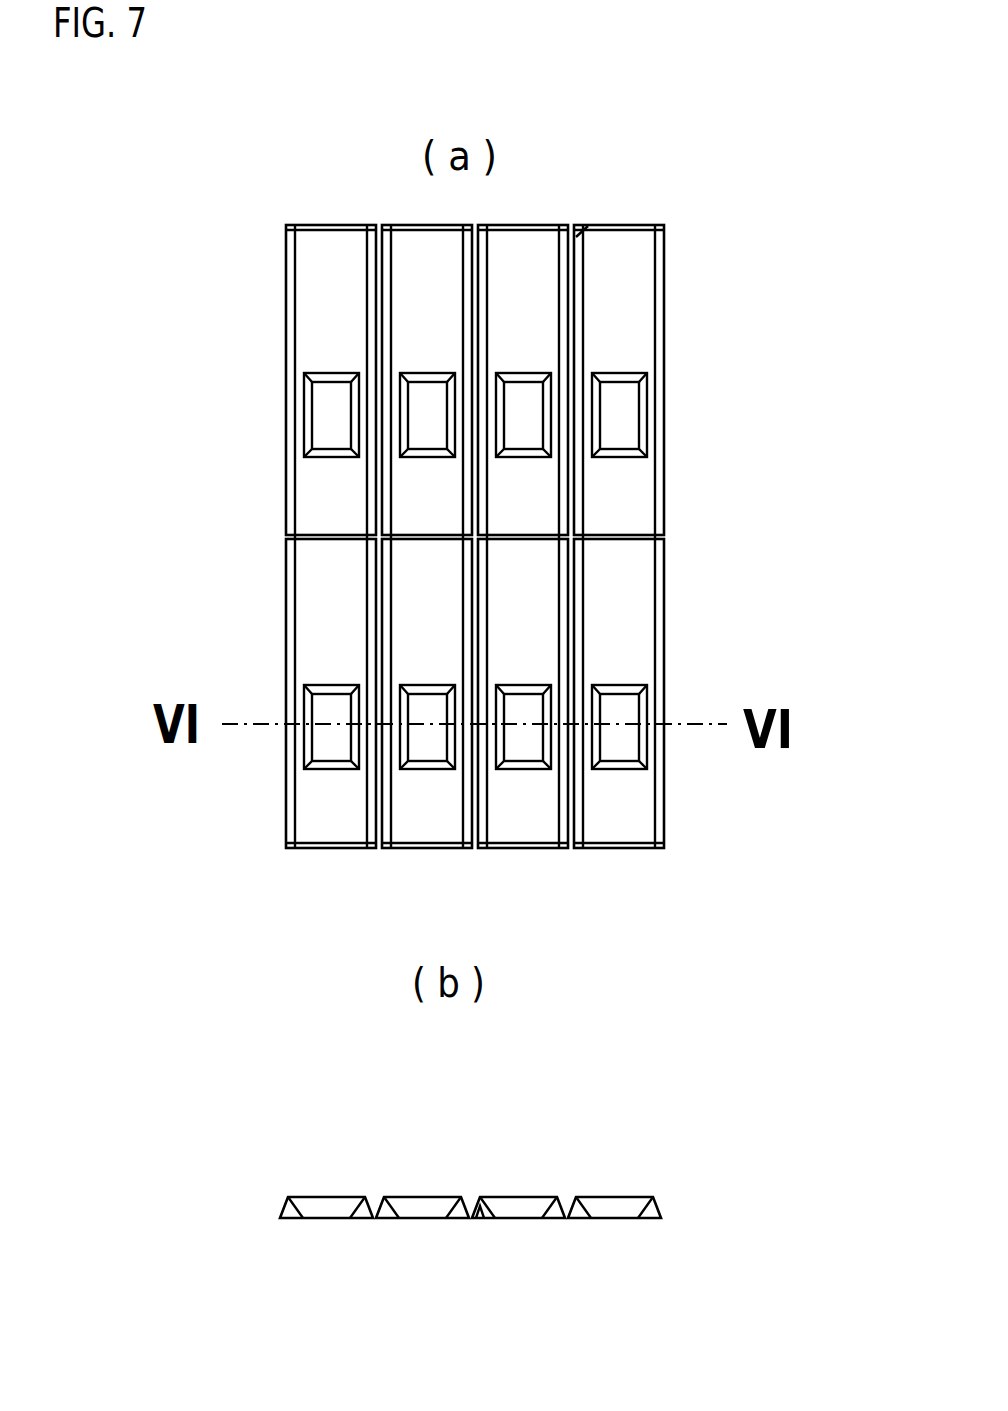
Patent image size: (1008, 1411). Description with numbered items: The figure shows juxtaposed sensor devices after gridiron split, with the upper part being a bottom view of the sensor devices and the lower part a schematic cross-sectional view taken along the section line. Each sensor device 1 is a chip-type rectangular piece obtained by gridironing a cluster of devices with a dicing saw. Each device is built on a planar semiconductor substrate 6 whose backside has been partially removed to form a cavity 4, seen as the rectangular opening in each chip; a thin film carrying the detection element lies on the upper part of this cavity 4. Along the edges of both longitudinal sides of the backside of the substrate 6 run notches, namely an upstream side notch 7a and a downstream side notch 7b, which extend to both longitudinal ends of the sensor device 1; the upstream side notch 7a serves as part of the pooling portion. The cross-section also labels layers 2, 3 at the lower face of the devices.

The sensor device 1 is at (617, 517).
The first layer 2 is at (610, 1218).
The second layer 3 is at (619, 1296).
The cavity 4 is at (618, 425).
The planar semiconductor substrate 6 is at (628, 345).
The upstream side notch 7a is at (597, 223).
The downstream side notch 7b is at (667, 265).